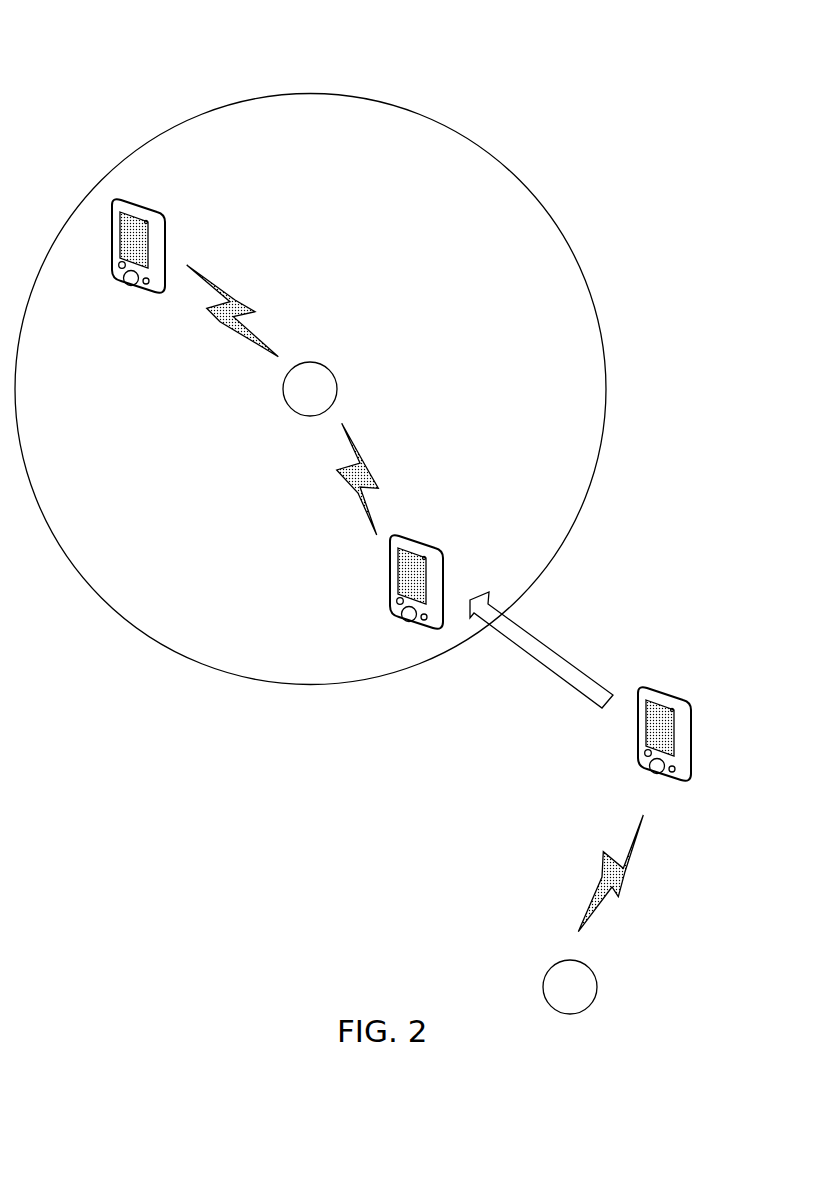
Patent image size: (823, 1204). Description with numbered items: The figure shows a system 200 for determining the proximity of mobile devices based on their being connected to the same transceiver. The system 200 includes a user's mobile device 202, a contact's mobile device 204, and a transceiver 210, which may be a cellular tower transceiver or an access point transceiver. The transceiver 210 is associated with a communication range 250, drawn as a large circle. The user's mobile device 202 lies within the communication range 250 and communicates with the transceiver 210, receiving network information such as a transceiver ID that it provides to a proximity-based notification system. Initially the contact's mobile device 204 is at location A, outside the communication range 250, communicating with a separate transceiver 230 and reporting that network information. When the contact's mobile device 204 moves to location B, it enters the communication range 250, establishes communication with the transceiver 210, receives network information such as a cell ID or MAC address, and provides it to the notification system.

The system 200 is at (148, 93).
The user's mobile device 202 is at (163, 217).
The contact's mobile device 204 is at (444, 557).
The transceiver 210 is at (327, 368).
The transceiver 230 is at (590, 967).
The communication range 250 is at (458, 128).